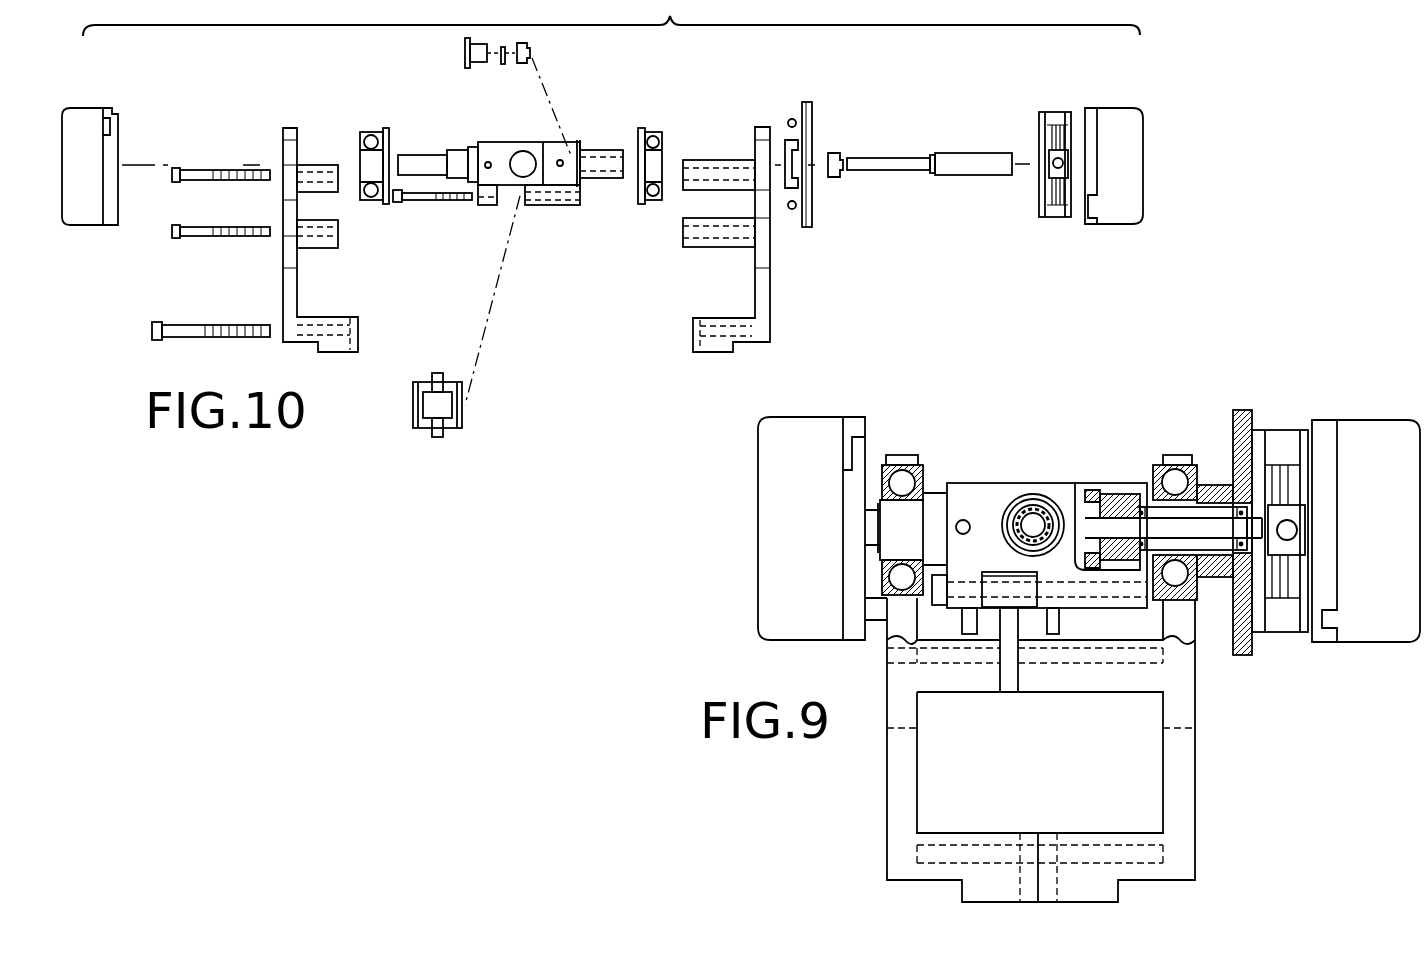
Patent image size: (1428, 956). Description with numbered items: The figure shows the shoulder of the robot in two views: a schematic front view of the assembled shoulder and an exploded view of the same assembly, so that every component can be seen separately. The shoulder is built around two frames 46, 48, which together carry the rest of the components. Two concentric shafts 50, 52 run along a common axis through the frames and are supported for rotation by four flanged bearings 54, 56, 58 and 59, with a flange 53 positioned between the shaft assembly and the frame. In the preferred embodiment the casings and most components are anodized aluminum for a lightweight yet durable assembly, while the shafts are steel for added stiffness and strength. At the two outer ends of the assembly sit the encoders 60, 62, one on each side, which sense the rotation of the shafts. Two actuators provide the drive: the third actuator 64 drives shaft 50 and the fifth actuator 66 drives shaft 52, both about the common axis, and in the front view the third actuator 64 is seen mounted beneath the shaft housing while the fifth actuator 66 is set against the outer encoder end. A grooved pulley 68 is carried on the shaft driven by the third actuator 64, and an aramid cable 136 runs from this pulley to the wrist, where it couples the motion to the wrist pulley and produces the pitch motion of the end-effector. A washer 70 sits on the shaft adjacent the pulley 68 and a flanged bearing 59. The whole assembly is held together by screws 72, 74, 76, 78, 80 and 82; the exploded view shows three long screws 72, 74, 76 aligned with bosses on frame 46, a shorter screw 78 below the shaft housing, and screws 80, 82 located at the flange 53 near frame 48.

In FIG. 10, the frame 46 is at (283, 278).
In FIG. 9, the frame 46 is at (887, 775).
In FIG. 10, the frame 48 is at (755, 280).
In FIG. 9, the frame 48 is at (1163, 775).
In FIG. 10, the concentric shaft 50 is at (485, 142).
In FIG. 9, the concentric shaft 50 is at (998, 483).
In FIG. 10, the concentric shaft 52 is at (970, 155).
In FIG. 9, the concentric shaft 52 is at (1118, 530).
In FIG. 10, the flange 53 is at (815, 135).
In FIG. 9, the flange 53 is at (1245, 410).
In FIG. 10, the flanged bearing 54 is at (385, 145).
In FIG. 9, the flanged bearing 54 is at (923, 470).
In FIG. 10, the flanged bearing 56 is at (665, 148).
In FIG. 9, the flanged bearing 56 is at (1190, 465).
In FIG. 10, the flanged bearing 58 is at (840, 177).
In FIG. 10, the flanged bearing 59 is at (530, 48).
In FIG. 10, the encoder 60 is at (122, 138).
In FIG. 9, the encoder 60 is at (826, 417).
In FIG. 10, the encoder 62 is at (1105, 225).
In FIG. 9, the encoder 62 is at (1372, 420).
In FIG. 10, the third actuator 64 is at (425, 380).
In FIG. 9, the third actuator 64 is at (1058, 628).
In FIG. 10, the fifth actuator 66 is at (1040, 200).
In FIG. 9, the fifth actuator 66 is at (1285, 430).
In FIG. 10, the grooved pulley 68 is at (478, 68).
In FIG. 9, the grooved pulley 68 is at (1112, 505).
In FIG. 10, the washer 70 is at (503, 65).
In FIG. 10, the screw 72 is at (200, 170).
In FIG. 10, the screw 74 is at (195, 227).
In FIG. 10, the screw 76 is at (183, 325).
In FIG. 10, the screw 78 is at (430, 205).
In FIG. 10, the screw 80 is at (790, 119).
In FIG. 10, the screw 82 is at (791, 210).
In FIG. 9, the aramid cable 136 is at (1090, 490).